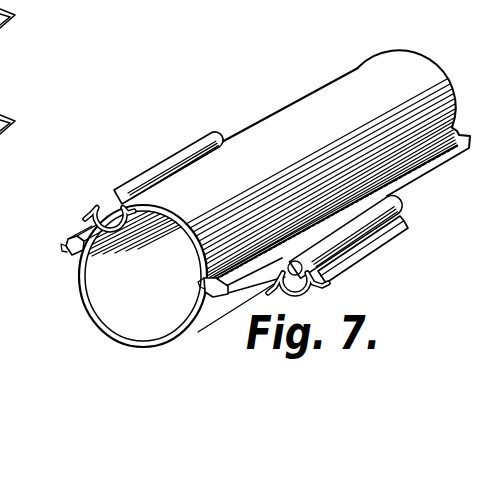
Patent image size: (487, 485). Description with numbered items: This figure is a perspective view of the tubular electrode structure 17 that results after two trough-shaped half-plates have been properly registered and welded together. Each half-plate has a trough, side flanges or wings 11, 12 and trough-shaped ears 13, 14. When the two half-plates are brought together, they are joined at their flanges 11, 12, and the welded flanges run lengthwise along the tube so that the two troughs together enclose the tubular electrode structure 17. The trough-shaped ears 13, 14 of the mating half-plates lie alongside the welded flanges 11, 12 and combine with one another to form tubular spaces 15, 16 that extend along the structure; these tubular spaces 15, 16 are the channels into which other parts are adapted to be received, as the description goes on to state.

The tubular electrode structure 17 is at (290, 101).
The side flange 11 is at (67, 241).
The side flange 12 is at (222, 317).
The trough-shaped ear 13 is at (163, 158).
The trough-shaped ear 14 is at (401, 198).
The tubular space 15 is at (96, 196).
The tubular space 16 is at (285, 284).